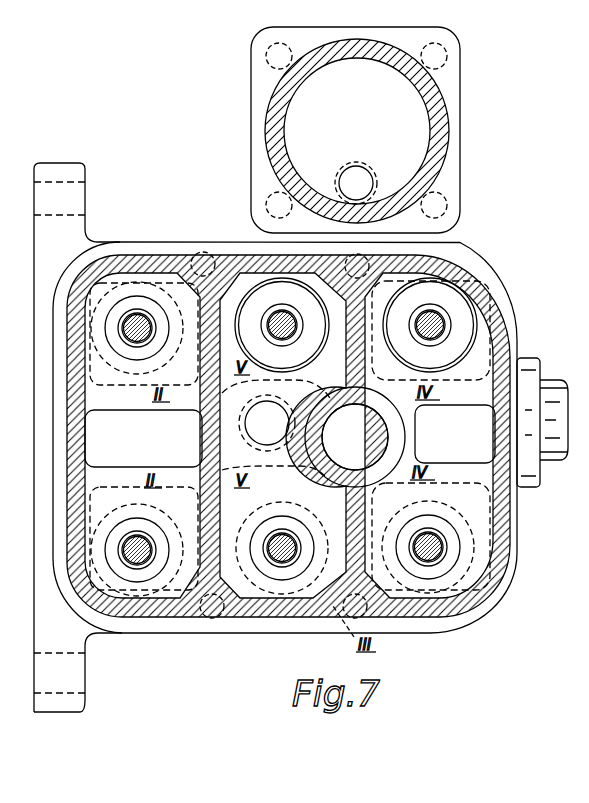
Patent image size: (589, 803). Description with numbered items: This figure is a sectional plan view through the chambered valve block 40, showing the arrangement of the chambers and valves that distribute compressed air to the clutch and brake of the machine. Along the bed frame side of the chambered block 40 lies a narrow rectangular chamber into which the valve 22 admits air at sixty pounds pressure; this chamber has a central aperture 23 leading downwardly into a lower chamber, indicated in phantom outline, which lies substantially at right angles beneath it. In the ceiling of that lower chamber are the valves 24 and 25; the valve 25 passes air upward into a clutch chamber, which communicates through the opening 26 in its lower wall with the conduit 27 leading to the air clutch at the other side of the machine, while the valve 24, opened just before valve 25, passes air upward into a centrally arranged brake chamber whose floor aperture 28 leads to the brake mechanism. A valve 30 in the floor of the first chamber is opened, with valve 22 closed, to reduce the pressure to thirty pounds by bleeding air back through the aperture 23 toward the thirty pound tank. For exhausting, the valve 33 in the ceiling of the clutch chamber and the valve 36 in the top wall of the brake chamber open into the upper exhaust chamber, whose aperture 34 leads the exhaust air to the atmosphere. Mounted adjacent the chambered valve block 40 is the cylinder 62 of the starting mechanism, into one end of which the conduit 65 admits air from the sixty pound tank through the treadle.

The valve 22 is at (137, 557).
The central aperture 23 is at (142, 410).
The valve 24 is at (282, 560).
The valve 25 is at (430, 560).
The opening 26 is at (452, 408).
The conduit 27 is at (560, 384).
The aperture 28 is at (283, 409).
The valve 30 is at (137, 318).
The valve 33 is at (433, 318).
The aperture 34 is at (329, 460).
The valve 36 is at (280, 322).
The chambered block 40 is at (207, 622).
The cylinder 62 is at (435, 116).
The conduit 65 is at (359, 176).